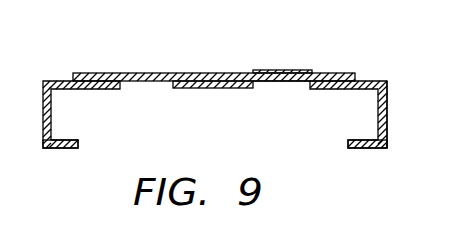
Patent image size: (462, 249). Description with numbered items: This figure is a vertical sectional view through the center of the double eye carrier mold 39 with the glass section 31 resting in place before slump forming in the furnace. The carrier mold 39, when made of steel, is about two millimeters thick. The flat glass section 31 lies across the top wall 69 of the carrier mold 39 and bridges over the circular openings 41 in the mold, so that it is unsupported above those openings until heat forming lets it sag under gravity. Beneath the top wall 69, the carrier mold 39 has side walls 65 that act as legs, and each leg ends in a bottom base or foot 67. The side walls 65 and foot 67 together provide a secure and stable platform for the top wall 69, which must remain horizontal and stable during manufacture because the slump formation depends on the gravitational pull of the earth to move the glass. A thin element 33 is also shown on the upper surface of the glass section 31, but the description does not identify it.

The glass section 31 is at (340, 74).
The semiconductor chip 33 is at (273, 71).
The carrier mold 39 is at (388, 117).
The circular openings 41 is at (282, 87).
The side walls 65 is at (51, 108).
The foot 67 is at (55, 148).
The top wall 69 is at (195, 89).